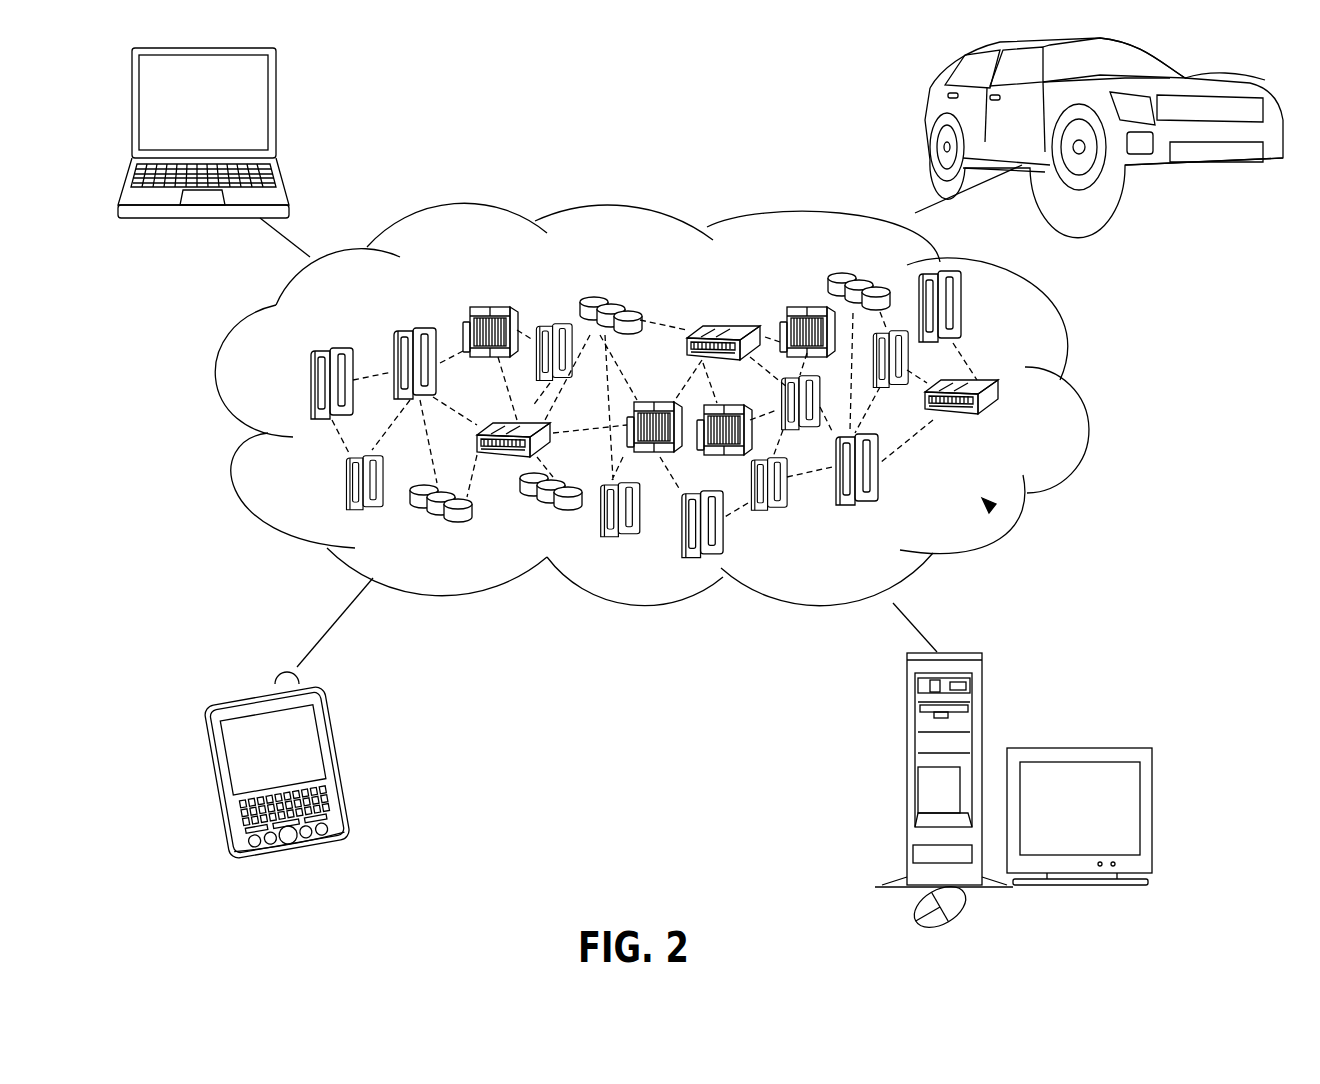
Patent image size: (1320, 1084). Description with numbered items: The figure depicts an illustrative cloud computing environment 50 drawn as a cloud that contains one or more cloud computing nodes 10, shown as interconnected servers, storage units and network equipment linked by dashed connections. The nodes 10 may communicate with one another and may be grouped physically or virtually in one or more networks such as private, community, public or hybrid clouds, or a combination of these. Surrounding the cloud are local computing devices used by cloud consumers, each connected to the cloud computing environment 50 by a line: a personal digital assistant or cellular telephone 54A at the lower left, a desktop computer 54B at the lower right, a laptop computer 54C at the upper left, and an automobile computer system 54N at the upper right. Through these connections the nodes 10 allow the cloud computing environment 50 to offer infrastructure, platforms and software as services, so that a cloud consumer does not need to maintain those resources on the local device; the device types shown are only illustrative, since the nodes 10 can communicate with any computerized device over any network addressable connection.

The cloud computing nodes 10 is at (993, 507).
The cloud computing environment 50 is at (1082, 396).
The personal digital assistant or cellular telephone 54A is at (329, 730).
The desktop computer 54B is at (905, 715).
The laptop computer 54C is at (276, 87).
The automobile computer system 54N is at (930, 98).